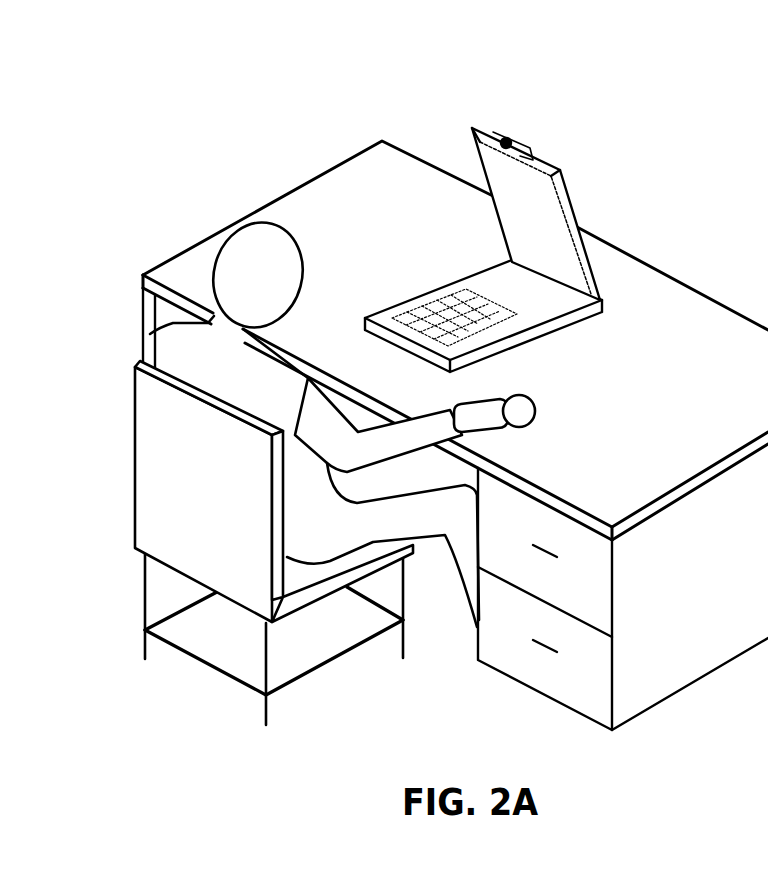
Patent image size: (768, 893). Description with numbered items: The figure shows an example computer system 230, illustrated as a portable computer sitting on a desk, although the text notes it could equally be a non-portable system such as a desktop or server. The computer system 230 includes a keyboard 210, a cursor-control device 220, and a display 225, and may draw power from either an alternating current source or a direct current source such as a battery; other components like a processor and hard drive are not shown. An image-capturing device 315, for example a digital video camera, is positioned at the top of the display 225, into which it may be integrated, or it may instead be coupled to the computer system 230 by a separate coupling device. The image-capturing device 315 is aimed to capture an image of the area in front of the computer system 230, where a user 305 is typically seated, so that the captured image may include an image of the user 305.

The keyboard 210 is at (410, 305).
The cursor-control device 220 is at (535, 424).
The display 225 is at (563, 238).
The computer system 230 is at (515, 209).
The user 305 is at (173, 350).
The image-capturing device 315 is at (500, 128).